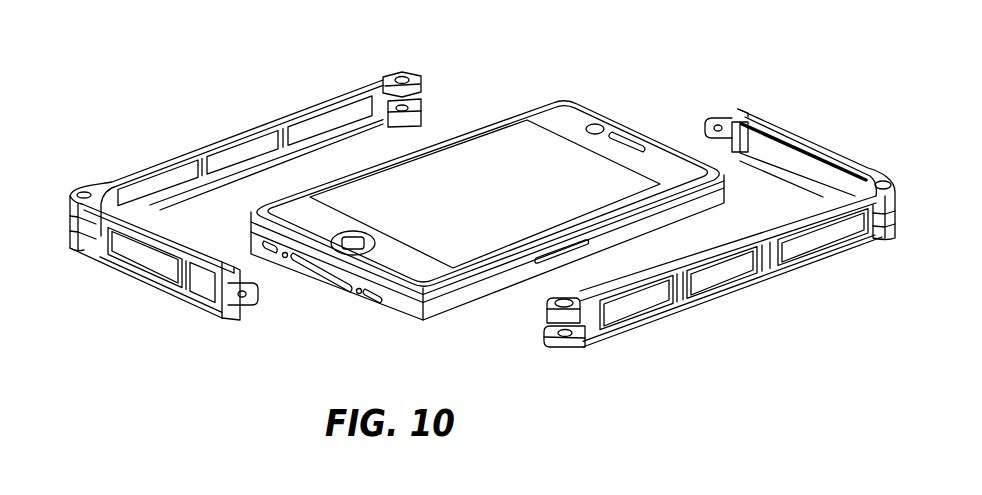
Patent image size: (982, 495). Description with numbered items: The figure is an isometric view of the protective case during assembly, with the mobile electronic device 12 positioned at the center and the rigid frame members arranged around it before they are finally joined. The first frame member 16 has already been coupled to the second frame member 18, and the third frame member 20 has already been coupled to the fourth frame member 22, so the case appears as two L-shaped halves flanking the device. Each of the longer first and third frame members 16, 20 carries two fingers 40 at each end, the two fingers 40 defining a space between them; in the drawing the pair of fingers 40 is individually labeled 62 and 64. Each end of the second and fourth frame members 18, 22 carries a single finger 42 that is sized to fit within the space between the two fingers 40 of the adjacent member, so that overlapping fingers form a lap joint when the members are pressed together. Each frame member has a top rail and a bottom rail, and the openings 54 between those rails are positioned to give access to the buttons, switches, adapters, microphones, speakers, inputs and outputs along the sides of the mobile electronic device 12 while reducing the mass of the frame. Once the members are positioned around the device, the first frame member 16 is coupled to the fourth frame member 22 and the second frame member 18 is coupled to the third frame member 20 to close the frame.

The mobile electronic device 12 is at (528, 145).
The first frame member 16 is at (212, 143).
The second frame member 18 is at (165, 292).
The third frame member 20 is at (719, 306).
The fourth frame member 22 is at (806, 134).
The fingers 40 is at (516, 220).
The finger 42 is at (705, 129).
The openings 54 is at (339, 128).
The upper connector portion 62 is at (448, 58).
The lower connector portion 64 is at (418, 124).